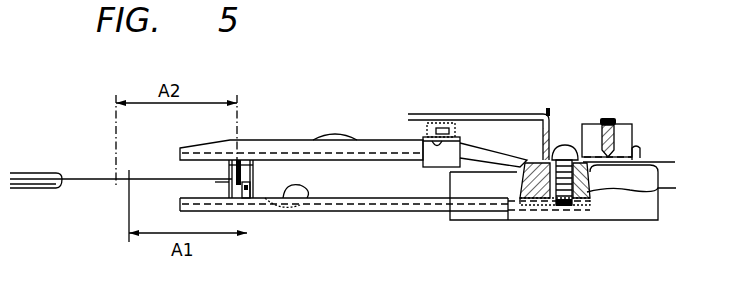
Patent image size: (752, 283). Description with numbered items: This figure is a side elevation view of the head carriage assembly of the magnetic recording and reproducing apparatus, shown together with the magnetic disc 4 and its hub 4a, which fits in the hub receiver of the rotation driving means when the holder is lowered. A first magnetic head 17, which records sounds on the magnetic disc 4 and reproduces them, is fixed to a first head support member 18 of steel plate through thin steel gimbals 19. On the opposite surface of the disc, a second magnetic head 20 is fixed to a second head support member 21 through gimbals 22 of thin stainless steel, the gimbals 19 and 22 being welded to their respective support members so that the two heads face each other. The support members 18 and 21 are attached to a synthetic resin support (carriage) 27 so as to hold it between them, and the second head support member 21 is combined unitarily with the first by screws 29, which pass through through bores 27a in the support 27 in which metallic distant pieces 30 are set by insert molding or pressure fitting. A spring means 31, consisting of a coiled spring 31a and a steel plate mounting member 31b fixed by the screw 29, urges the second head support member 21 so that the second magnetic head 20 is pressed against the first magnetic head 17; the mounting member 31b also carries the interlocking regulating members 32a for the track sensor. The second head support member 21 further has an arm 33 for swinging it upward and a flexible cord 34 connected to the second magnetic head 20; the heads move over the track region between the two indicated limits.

The magnetic disc 4 is at (116, 181).
The hub 4a is at (60, 173).
The first magnetic head 17 is at (226, 188).
The first head support member 18 is at (333, 212).
The gimbals 19 is at (304, 205).
The second magnetic head 20 is at (228, 172).
The second head support member 21 is at (269, 140).
The gimbals 22 is at (283, 165).
The support (carriage) 27 is at (450, 222).
The through bores 27a is at (566, 206).
The screws 29 is at (566, 145).
The metallic distant pieces 30 is at (640, 181).
The spring means 31 is at (478, 114).
The coiled spring 31a is at (425, 130).
The mounting member 31b is at (548, 110).
The interlocking regulating members 32a is at (612, 120).
The arm 33 is at (460, 146).
The flexible cord 34 is at (333, 135).